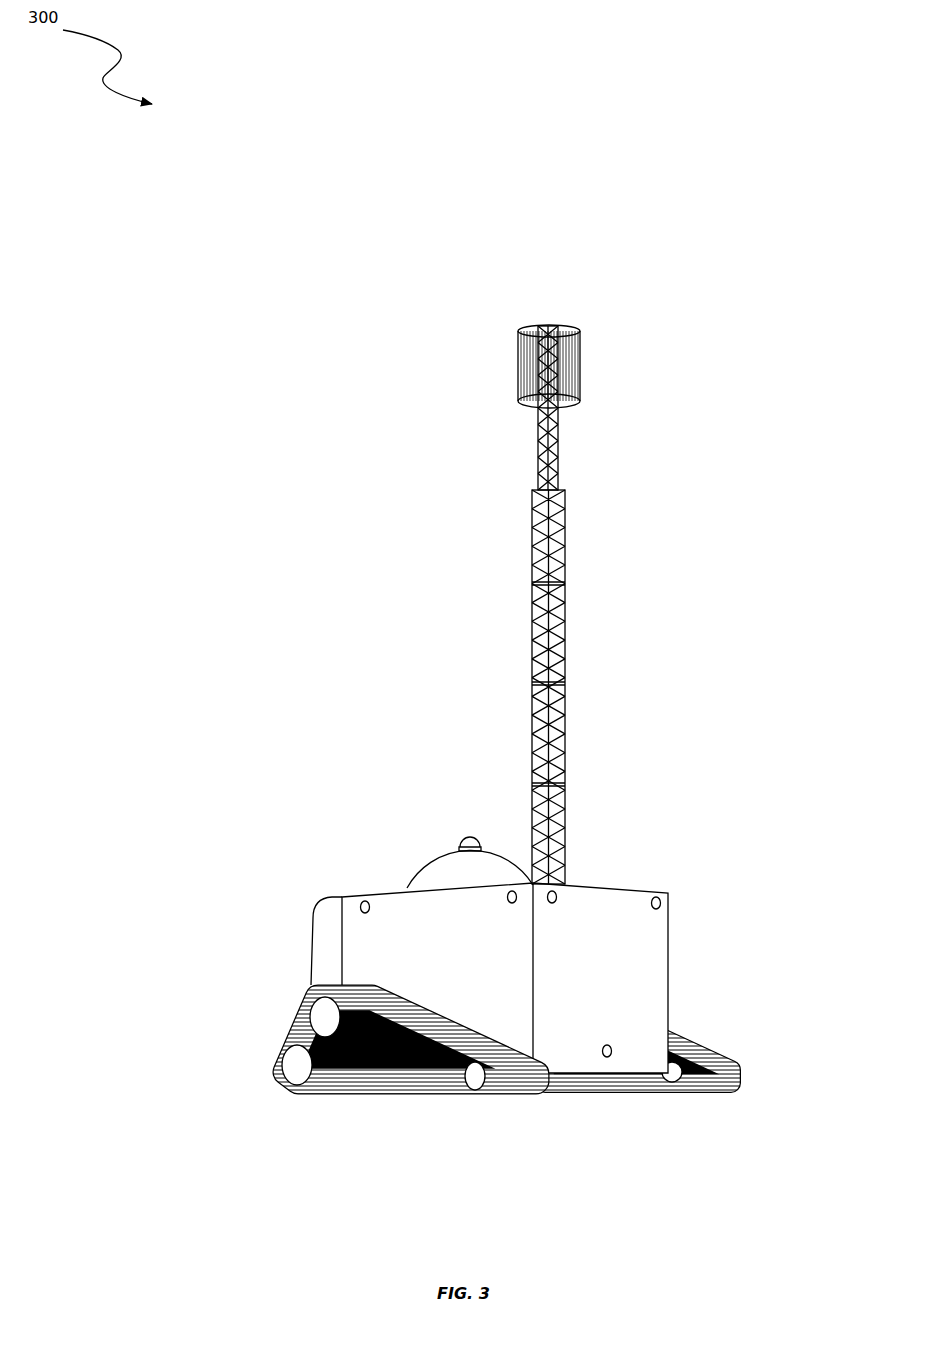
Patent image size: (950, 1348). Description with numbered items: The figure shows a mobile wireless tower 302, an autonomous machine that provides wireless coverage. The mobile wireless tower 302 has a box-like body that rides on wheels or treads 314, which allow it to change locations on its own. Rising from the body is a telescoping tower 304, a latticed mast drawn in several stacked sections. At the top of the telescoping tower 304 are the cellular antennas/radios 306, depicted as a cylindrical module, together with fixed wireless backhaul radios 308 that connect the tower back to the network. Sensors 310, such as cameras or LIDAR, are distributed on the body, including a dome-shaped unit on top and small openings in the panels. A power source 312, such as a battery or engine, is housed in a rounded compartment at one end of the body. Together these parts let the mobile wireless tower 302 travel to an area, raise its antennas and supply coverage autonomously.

The mobile wireless tower 302 is at (652, 970).
The telescoping tower 304 is at (568, 606).
The cellular antennas/radios 306 is at (582, 356).
The fixed wireless backhaul radios 308 is at (530, 315).
The sensors 310 is at (597, 1040).
The power source 312 is at (322, 935).
The wheels or treads 314 is at (285, 1026).